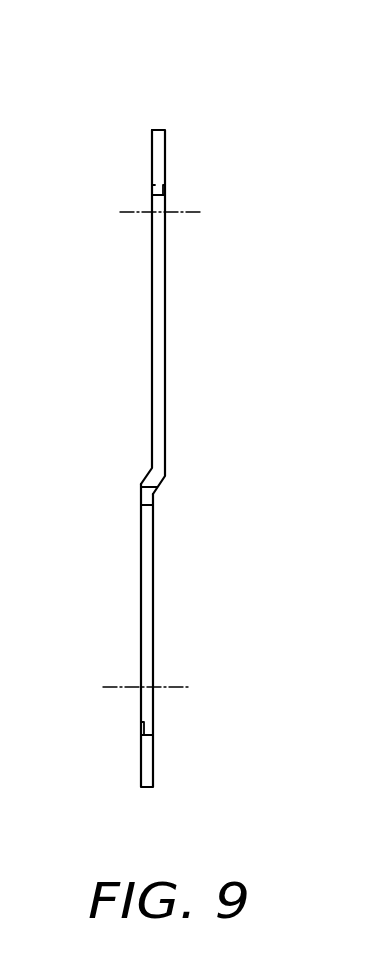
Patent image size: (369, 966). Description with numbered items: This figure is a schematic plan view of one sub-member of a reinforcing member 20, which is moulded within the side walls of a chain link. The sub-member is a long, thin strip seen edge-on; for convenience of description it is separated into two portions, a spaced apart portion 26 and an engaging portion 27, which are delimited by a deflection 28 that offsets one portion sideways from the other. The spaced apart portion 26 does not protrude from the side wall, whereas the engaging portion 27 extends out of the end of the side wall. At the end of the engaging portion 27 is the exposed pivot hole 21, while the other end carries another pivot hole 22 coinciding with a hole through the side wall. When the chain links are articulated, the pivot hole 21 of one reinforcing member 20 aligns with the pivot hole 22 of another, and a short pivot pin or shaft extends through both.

The reinforcing member 20 is at (234, 147).
The pivot hole 21 is at (155, 711).
The pivot hole 22 is at (168, 206).
The spaced apart portion 26 is at (166, 341).
The engaging portion 27 is at (154, 599).
The deflection 28 is at (150, 471).